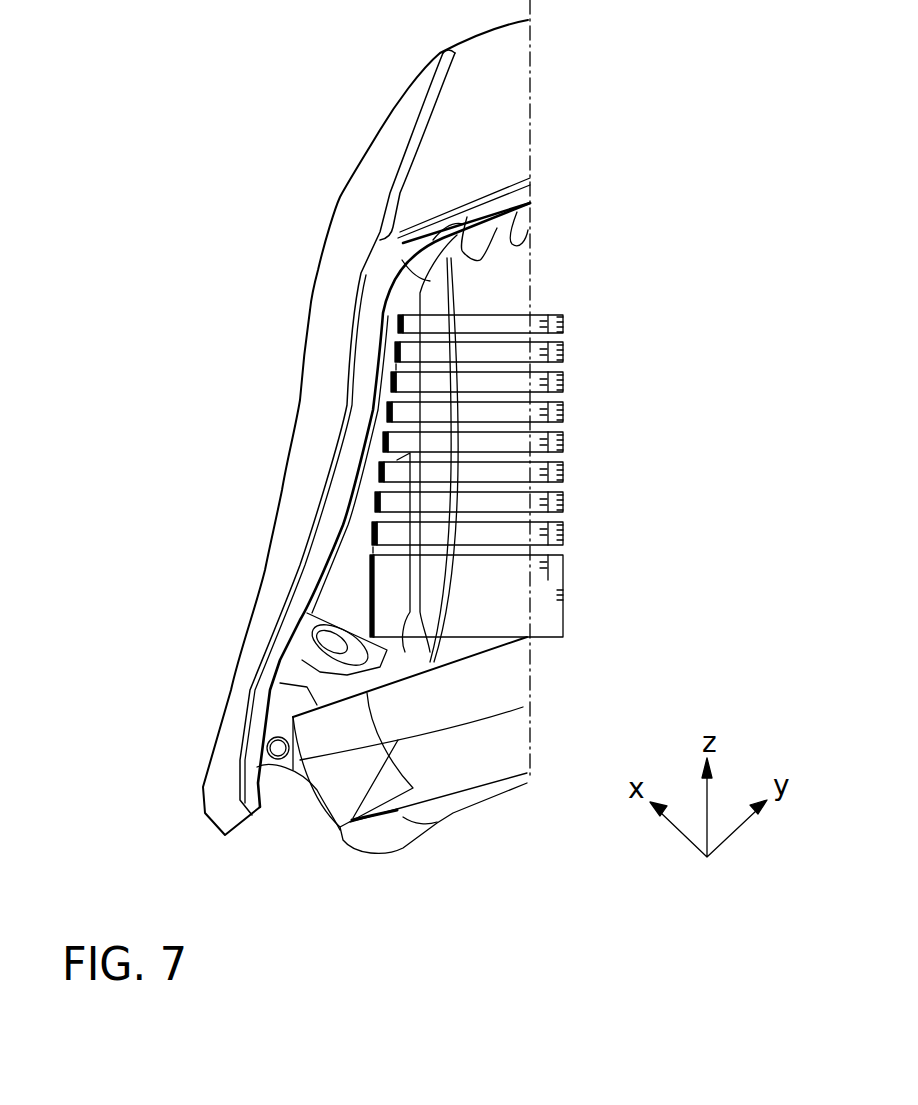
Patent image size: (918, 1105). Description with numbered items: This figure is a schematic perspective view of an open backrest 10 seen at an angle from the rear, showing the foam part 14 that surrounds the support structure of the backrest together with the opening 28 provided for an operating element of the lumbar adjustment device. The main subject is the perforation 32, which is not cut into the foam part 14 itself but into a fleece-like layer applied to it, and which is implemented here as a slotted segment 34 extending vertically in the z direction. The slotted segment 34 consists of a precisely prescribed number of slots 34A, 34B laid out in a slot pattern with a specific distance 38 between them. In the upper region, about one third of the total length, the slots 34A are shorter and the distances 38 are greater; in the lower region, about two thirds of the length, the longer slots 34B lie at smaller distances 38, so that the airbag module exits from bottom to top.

The backrest 10 is at (640, 122).
The foam part 14 is at (338, 283).
The opening 28 is at (332, 645).
The perforation 32 is at (378, 476).
The slotted segment 34 is at (590, 315).
The slots 34A is at (400, 323).
The slots 34B is at (375, 503).
The distance 38 is at (392, 367).